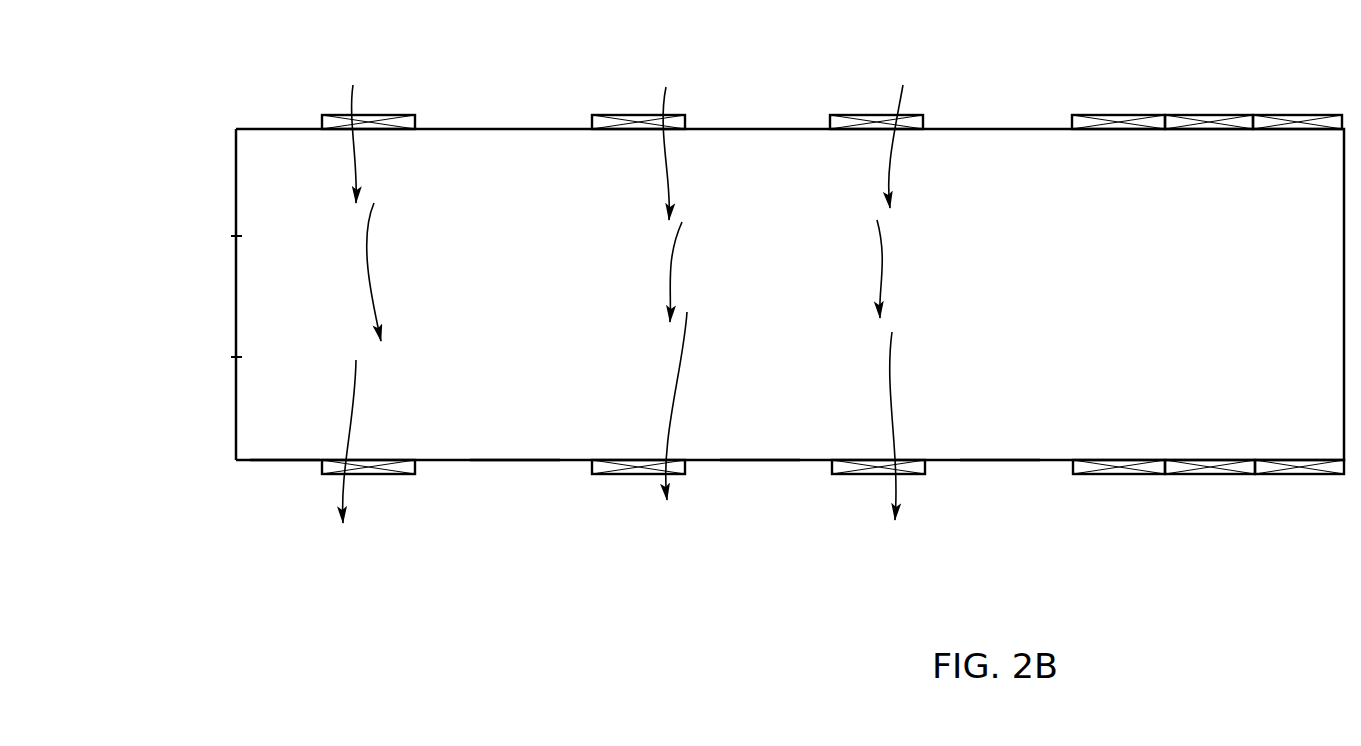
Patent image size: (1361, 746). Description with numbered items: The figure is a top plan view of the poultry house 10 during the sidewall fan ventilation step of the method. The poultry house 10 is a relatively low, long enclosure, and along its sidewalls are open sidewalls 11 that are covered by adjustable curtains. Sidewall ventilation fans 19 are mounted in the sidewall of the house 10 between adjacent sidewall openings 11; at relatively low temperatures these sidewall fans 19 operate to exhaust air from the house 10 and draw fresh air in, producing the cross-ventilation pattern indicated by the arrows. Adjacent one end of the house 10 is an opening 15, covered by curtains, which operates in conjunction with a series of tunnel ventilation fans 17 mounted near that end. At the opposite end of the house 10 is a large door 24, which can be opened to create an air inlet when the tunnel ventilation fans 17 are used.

The poultry house 10 is at (949, 78).
The open sidewalls 11 is at (525, 462).
The opening 15 is at (285, 463).
The tunnel ventilation fans 17 is at (1257, 115).
The sidewall ventilation fans 19 is at (867, 113).
The large door 24 is at (237, 297).